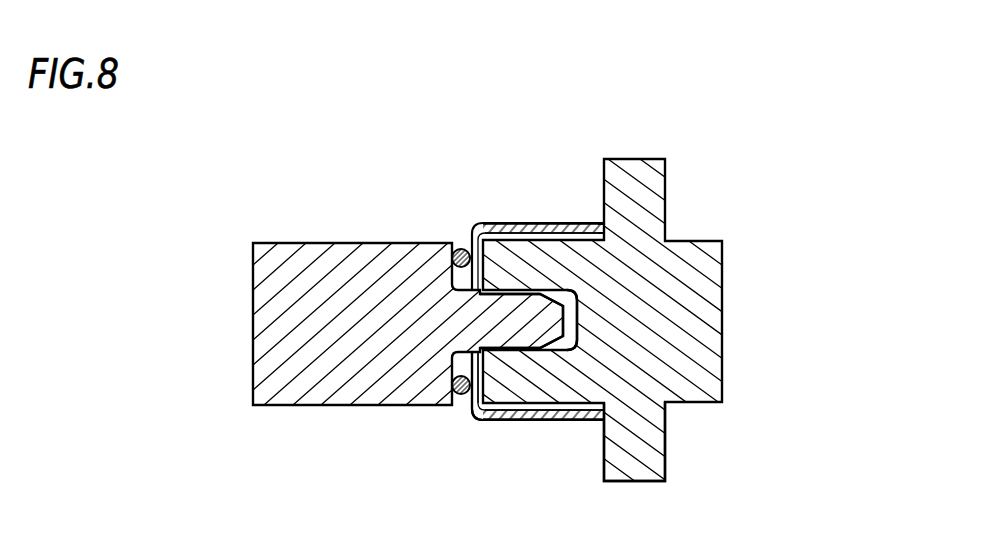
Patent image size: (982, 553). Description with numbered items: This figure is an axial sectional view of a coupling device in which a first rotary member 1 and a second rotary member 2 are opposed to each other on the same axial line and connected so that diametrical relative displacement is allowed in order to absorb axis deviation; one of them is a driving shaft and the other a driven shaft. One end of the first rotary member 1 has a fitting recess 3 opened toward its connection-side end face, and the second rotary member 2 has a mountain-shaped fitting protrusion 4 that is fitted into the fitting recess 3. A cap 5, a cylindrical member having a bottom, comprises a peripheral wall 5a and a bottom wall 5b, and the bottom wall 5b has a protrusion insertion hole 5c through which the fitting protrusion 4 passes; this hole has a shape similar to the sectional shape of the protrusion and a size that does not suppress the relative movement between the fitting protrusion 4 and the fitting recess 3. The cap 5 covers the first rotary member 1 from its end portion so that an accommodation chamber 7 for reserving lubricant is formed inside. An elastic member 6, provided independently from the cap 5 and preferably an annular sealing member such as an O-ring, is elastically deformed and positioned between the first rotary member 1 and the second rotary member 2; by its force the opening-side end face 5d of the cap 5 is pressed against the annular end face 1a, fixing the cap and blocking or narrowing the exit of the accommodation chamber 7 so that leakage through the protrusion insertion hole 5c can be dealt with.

The first rotary member 1 is at (672, 410).
The annular end face 1a is at (620, 437).
The second rotary member 2 is at (305, 408).
The fitting recess 3 is at (570, 320).
The fitting protrusion 4 is at (512, 318).
The cap 5 is at (505, 221).
The peripheral wall 5a is at (560, 227).
The bottom wall 5b is at (462, 405).
The protrusion insertion hole 5c is at (455, 355).
The opening-side end face 5d is at (603, 229).
The elastic member 6 is at (456, 251).
The accommodation chamber 7 is at (500, 407).